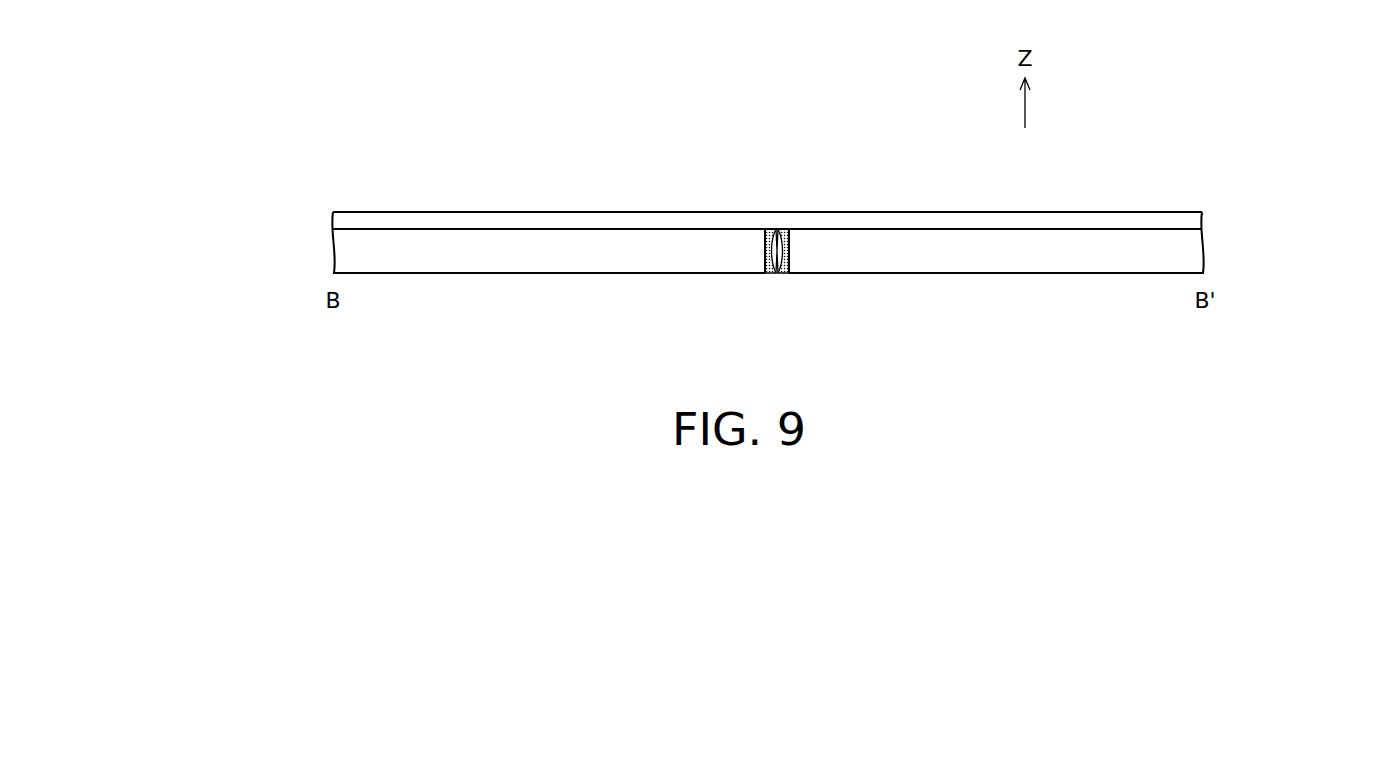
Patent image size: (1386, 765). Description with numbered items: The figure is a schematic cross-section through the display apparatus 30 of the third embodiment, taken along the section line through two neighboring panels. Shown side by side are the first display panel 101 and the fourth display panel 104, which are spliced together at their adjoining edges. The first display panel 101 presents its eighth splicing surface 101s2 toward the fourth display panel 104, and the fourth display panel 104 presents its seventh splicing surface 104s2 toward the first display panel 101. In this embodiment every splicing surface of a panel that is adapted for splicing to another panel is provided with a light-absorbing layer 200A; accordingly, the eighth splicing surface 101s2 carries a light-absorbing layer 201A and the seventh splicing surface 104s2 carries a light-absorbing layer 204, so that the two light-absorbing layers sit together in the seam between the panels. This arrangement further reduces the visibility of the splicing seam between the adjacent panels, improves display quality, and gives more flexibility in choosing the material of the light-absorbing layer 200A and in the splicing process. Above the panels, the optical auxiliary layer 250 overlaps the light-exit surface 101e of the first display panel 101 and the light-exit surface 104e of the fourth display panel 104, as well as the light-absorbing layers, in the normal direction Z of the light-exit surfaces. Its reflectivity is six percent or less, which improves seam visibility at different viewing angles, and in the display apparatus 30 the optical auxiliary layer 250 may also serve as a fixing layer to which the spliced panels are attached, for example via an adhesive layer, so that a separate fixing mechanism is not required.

The display apparatus 30 is at (1231, 356).
The first display panel 101 is at (1187, 250).
The fourth display panel 104 is at (352, 249).
The light-exit surface of the first display panel 101e is at (1145, 219).
The light-exit surface of the fourth display panel 104e is at (461, 219).
The eighth splicing surface 101s2 is at (769, 268).
The seventh splicing surface 104s2 is at (790, 241).
The light-absorbing layer 200A is at (772, 196).
The light-absorbing layer 201A is at (809, 216).
The light-absorbing layer 204 is at (767, 232).
The optical auxiliary layer 250 is at (962, 222).